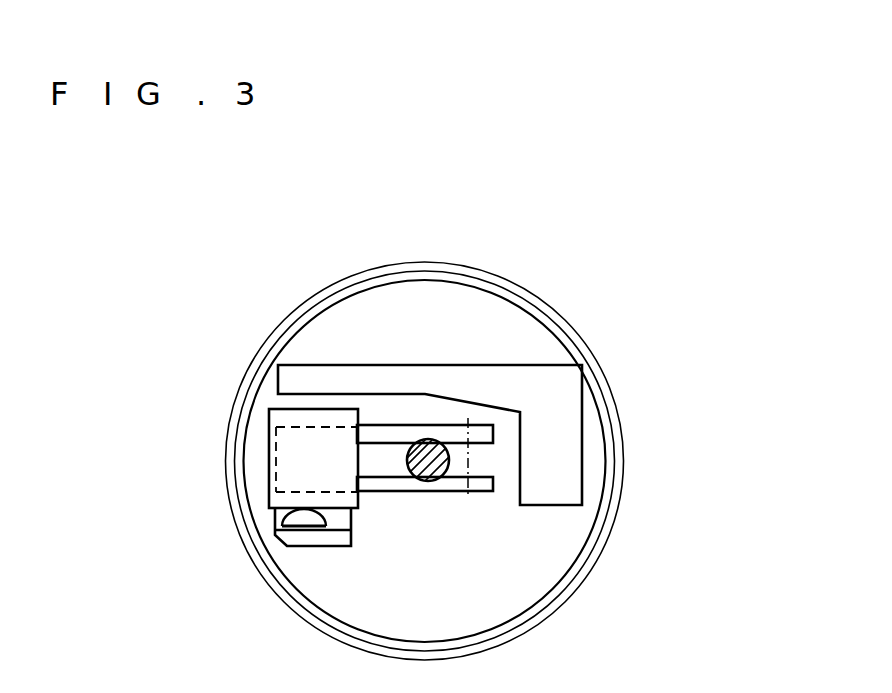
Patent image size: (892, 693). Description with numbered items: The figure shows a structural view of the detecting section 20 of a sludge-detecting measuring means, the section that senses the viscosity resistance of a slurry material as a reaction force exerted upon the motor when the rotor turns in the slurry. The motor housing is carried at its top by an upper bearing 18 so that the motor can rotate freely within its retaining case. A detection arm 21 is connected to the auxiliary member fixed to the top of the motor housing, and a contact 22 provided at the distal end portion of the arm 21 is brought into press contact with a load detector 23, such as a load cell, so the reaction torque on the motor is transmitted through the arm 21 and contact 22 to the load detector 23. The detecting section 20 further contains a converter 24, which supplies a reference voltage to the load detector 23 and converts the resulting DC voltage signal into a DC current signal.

The detecting section 20 is at (645, 380).
The converter 24 is at (540, 373).
The load detector 23 is at (269, 431).
The detection arm 21 is at (383, 483).
The upper bearing 18 is at (443, 476).
The contact 22 is at (278, 512).